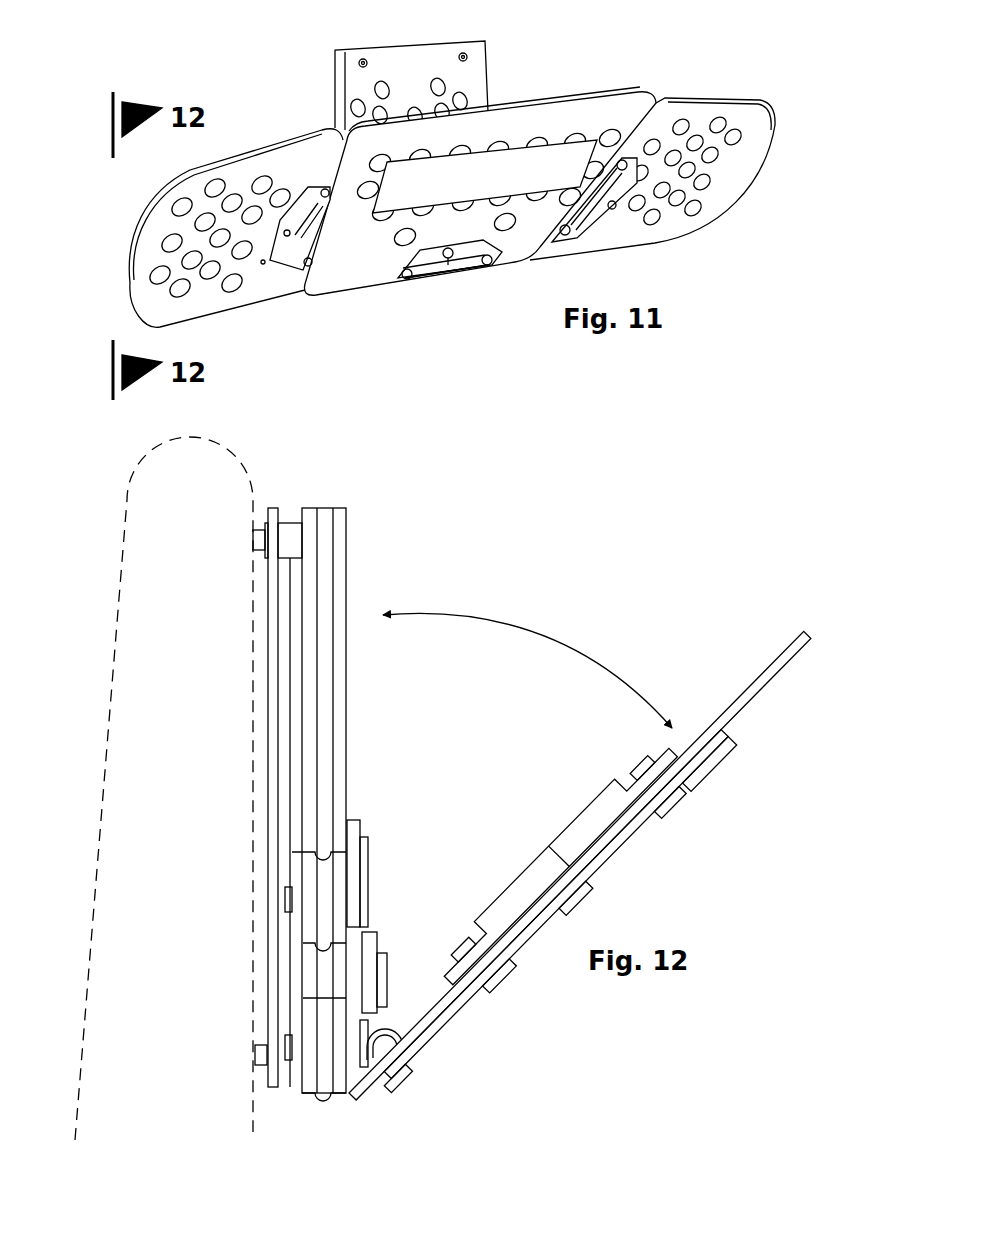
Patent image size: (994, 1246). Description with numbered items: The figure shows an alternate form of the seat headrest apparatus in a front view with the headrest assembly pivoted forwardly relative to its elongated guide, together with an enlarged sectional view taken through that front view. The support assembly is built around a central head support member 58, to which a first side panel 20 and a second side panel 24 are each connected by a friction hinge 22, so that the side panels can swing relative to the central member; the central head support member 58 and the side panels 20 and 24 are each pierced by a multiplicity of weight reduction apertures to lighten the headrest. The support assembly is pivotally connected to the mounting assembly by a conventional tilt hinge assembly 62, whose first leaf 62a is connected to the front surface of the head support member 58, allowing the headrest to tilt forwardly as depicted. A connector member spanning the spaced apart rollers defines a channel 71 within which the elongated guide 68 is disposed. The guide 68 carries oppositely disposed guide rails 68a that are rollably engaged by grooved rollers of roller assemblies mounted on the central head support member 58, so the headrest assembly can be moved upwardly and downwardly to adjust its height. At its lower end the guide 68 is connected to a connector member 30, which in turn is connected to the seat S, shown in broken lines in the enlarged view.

In FIG. 11, the first side panel 20 is at (178, 190).
In FIG. 11, the second side panel 24 is at (747, 133).
In FIG. 11, the friction hinge 22 is at (277, 273).
In FIG. 11, the central head support member 58 is at (495, 58).
In FIG. 11, the channel 71 is at (370, 307).
In FIG. 11, the tilt hinge assembly 62 is at (457, 290).
In FIG. 12, the tilt hinge assembly 62 is at (387, 1087).
In FIG. 11, the first leaf 62a is at (500, 263).
In FIG. 12, the seat S is at (143, 525).
In FIG. 12, the connector member 30 is at (263, 655).
In FIG. 12, the elongated guide 68 is at (350, 533).
In FIG. 12, the guide rails 68a is at (328, 723).